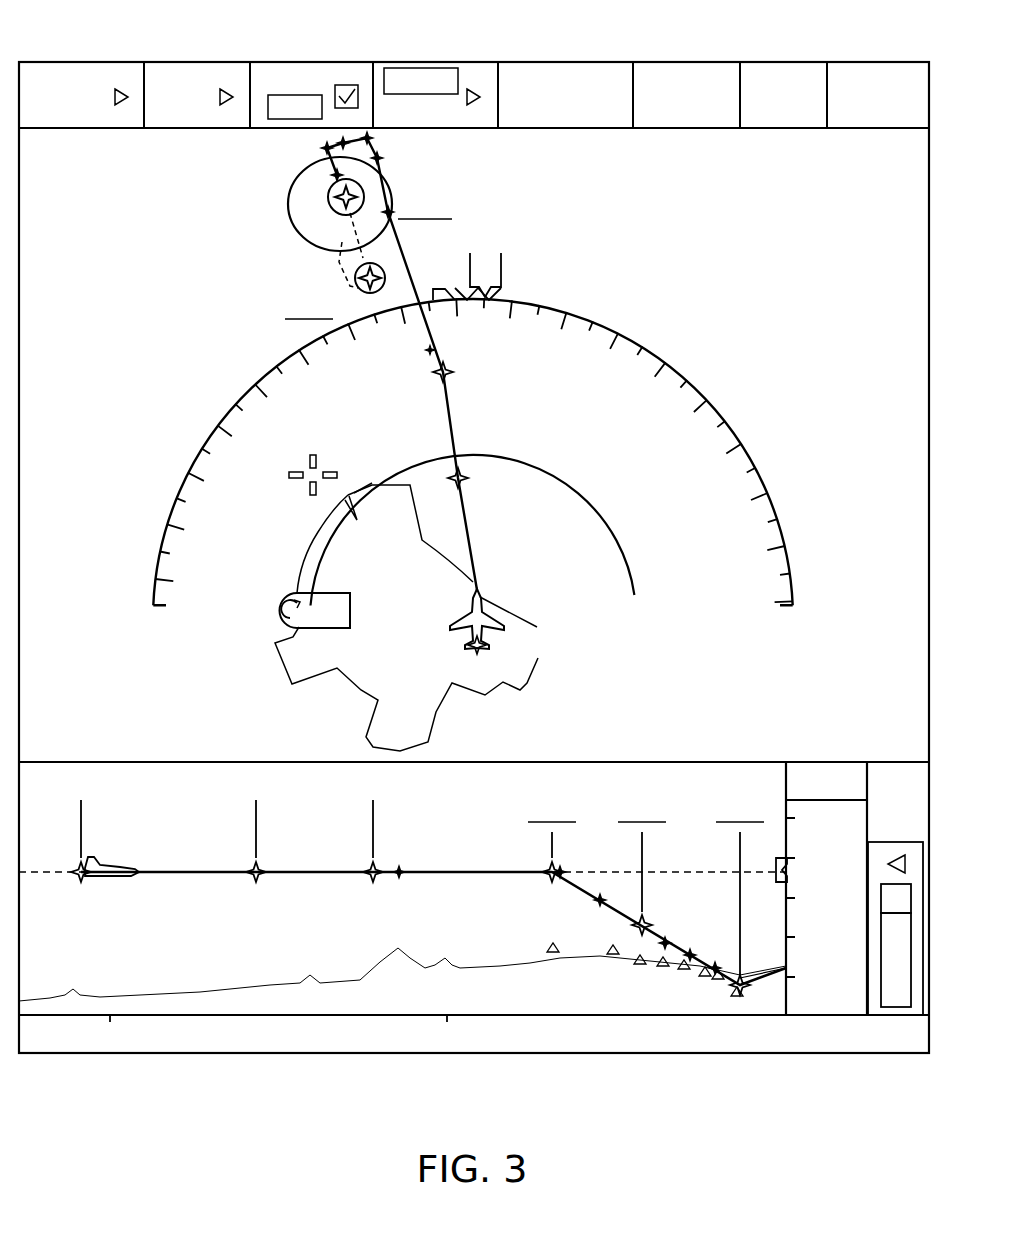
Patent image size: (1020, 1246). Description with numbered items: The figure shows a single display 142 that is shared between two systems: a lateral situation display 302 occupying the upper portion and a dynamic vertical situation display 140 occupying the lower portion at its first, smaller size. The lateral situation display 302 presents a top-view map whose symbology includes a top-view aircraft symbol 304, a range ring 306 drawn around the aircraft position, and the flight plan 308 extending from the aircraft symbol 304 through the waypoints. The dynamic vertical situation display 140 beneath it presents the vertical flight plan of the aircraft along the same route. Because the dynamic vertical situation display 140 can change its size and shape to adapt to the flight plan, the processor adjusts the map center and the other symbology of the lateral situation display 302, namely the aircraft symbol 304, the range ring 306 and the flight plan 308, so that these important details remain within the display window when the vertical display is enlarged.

The lateral situation display 302 is at (730, 160).
The display 142 is at (360, 62).
The top-view aircraft symbol 304 is at (485, 595).
The range ring 306 is at (549, 478).
The flight plan 308 is at (443, 377).
The dynamic vertical situation display 140 is at (612, 1015).